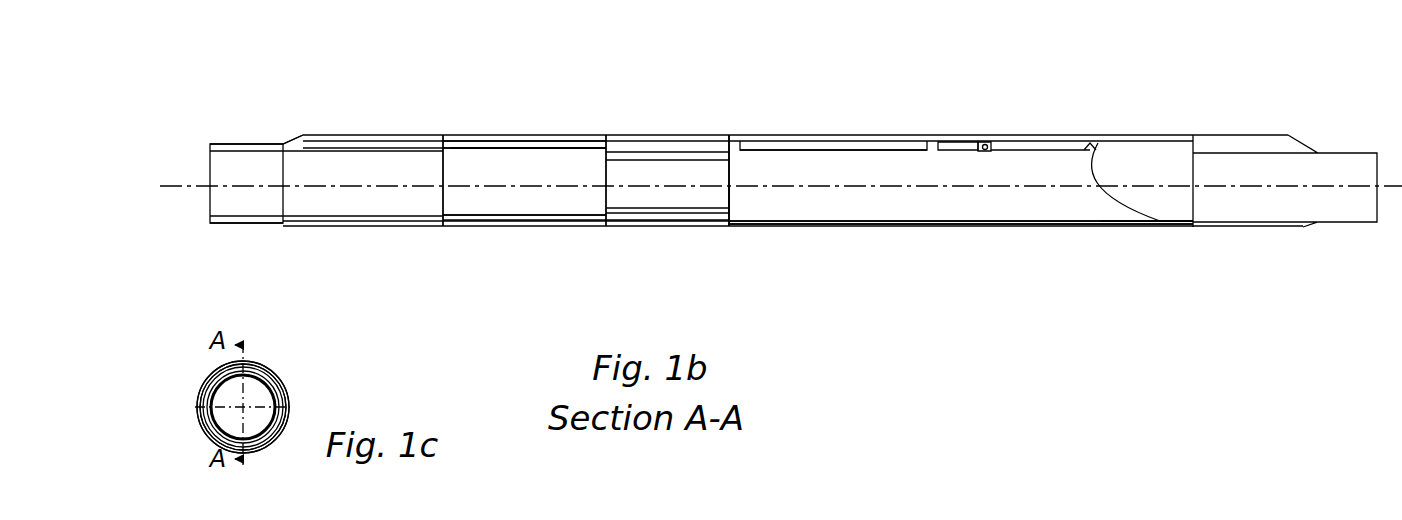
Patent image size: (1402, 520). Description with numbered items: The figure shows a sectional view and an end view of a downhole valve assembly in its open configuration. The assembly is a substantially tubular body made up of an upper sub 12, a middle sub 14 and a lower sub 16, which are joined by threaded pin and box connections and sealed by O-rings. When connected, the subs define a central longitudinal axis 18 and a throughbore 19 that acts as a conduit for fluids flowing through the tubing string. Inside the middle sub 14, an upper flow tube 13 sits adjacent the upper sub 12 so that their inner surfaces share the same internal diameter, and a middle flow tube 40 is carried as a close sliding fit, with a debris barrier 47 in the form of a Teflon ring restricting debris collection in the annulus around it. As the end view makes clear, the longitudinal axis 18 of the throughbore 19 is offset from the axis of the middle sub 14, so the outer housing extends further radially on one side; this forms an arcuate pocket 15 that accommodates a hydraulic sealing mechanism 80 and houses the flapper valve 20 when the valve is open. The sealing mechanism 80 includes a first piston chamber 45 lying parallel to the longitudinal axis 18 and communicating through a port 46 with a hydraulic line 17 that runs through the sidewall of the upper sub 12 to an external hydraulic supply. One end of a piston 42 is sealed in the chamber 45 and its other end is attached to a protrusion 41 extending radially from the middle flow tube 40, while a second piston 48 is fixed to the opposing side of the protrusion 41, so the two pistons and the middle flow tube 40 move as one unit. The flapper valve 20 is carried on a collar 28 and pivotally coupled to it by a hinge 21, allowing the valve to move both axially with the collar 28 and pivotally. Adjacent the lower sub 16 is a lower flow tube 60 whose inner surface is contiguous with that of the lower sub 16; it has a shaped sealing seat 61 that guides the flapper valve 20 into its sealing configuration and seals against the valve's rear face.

In FIG. 1B, the upper sub 12 is at (318, 135).
In FIG. 1B, the upper flow tube 13 is at (593, 222).
In FIG. 1B, the middle sub 14 is at (562, 136).
In FIG. 1C, the middle sub 14 is at (285, 378).
In FIG. 1C, the arcuate pocket 15 is at (258, 366).
In FIG. 1B, the lower sub 16 is at (1258, 142).
In FIG. 1B, the hydraulic line 17 is at (300, 136).
In FIG. 1B, the central longitudinal axis 18 is at (463, 187).
In FIG. 1C, the central longitudinal axis 18 is at (237, 398).
In FIG. 1B, the throughbore 19 is at (542, 205).
In FIG. 1C, the throughbore 19 is at (230, 395).
In FIG. 1B, the flapper valve 20 is at (1053, 146).
In FIG. 1B, the hinge 21 is at (992, 142).
In FIG. 1B, the collar 28 is at (957, 144).
In FIG. 1B, the middle flow tube 40 is at (877, 217).
In FIG. 1C, the middle flow tube 40 is at (287, 393).
In FIG. 1B, the protrusion 41 is at (733, 141).
In FIG. 1B, the piston 42 is at (628, 138).
In FIG. 1B, the first piston chamber 45 is at (497, 139).
In FIG. 1B, the port 46 is at (448, 137).
In FIG. 1B, the debris barrier 47 is at (745, 220).
In FIG. 1B, the second piston 48 is at (786, 144).
In FIG. 1B, the lower flow tube 60 is at (1113, 180).
In FIG. 1B, the sealing seat 61 is at (1130, 210).
In FIG. 1B, the hydraulic sealing mechanism 80 is at (847, 131).